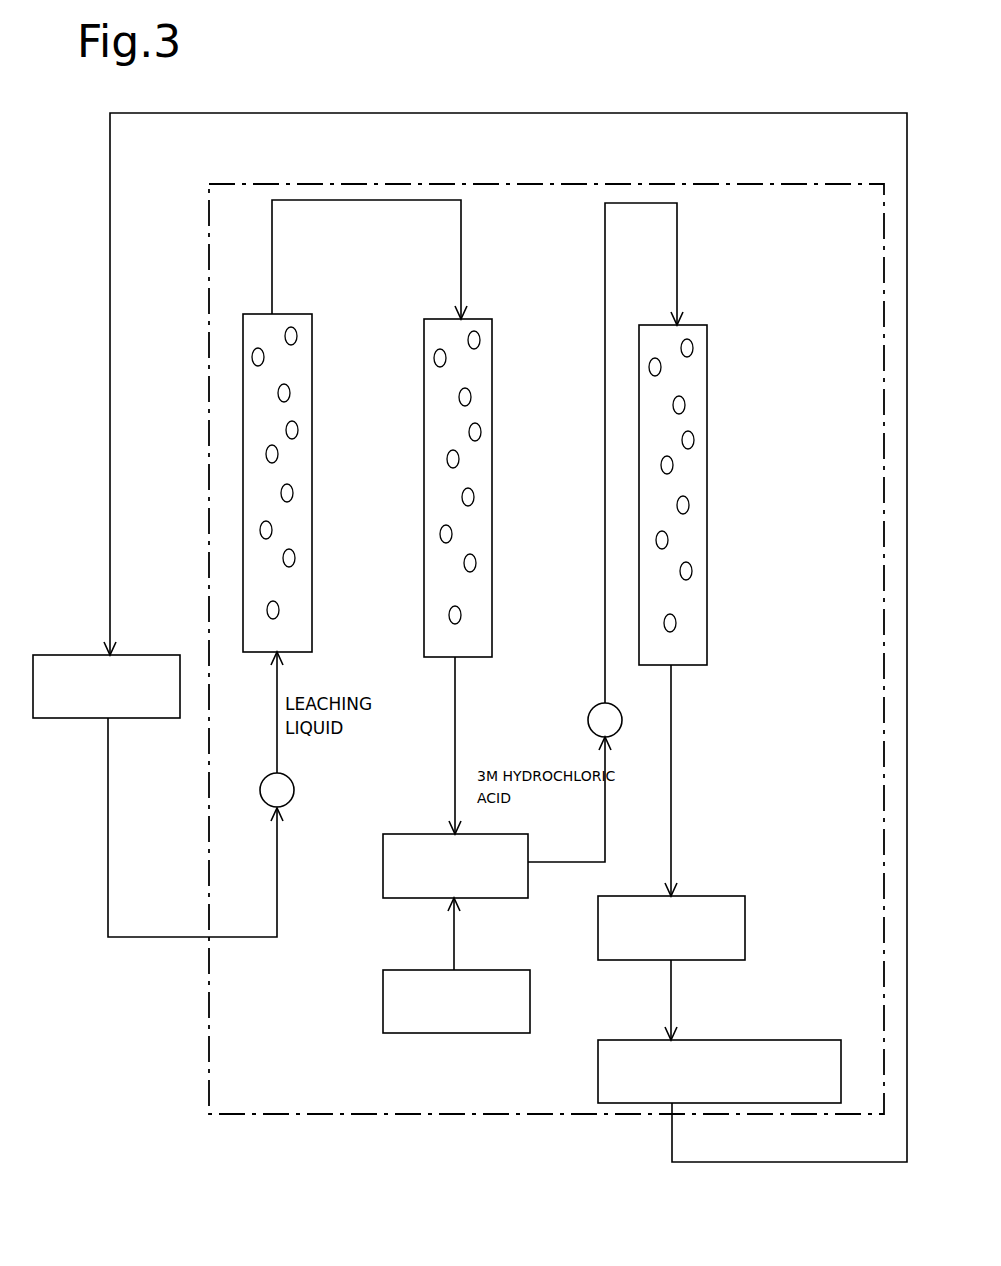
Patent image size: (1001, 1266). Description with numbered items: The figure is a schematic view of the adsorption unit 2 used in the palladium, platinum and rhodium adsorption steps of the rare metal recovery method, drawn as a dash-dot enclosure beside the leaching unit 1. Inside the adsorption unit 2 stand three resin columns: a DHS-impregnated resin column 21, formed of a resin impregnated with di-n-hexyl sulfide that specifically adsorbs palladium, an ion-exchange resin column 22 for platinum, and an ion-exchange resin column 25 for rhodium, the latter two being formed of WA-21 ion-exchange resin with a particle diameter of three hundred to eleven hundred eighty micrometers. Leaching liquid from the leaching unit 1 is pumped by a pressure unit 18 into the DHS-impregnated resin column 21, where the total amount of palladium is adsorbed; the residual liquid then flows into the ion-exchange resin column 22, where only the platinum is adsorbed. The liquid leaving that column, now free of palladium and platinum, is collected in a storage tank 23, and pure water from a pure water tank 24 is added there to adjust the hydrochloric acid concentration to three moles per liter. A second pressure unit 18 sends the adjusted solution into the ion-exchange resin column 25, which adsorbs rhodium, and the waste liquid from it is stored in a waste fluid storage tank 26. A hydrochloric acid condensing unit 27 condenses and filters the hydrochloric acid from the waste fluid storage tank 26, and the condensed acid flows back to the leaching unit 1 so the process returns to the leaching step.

The leaching unit 1 is at (150, 655).
The adsorption unit 2 is at (812, 180).
The pressure unit 18 is at (294, 783).
The DHS-impregnated resin column 21 is at (312, 343).
The ion-exchange resin column for platinum 22 is at (492, 348).
The storage tank 23 is at (559, 822).
The pure water tank 24 is at (502, 970).
The ion-exchange resin column for rhodium 25 is at (707, 345).
The waste fluid storage tank 26 is at (716, 896).
The hydrochloric acid condensing unit 27 is at (780, 1040).